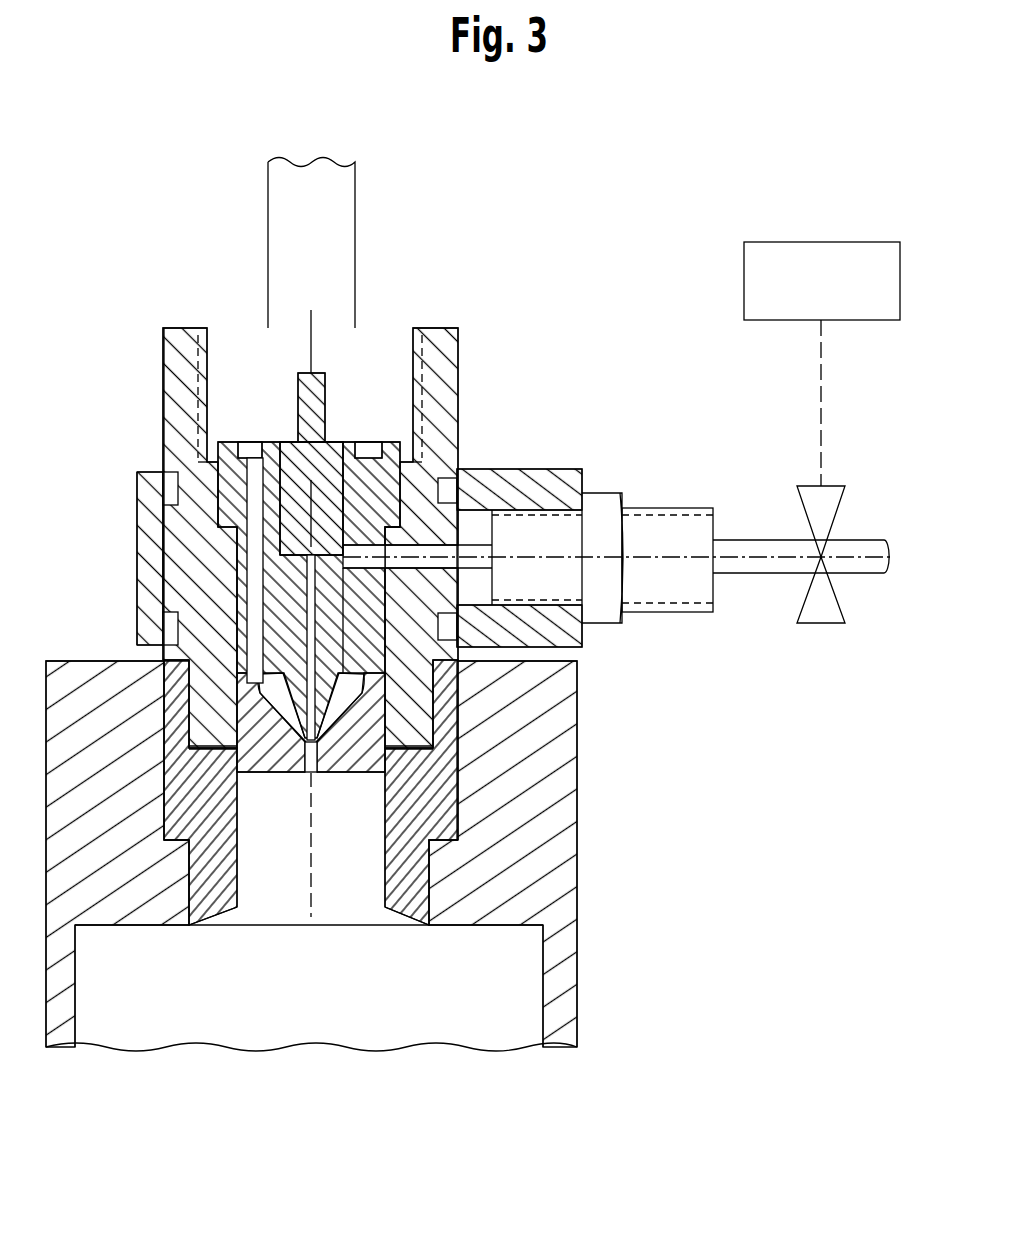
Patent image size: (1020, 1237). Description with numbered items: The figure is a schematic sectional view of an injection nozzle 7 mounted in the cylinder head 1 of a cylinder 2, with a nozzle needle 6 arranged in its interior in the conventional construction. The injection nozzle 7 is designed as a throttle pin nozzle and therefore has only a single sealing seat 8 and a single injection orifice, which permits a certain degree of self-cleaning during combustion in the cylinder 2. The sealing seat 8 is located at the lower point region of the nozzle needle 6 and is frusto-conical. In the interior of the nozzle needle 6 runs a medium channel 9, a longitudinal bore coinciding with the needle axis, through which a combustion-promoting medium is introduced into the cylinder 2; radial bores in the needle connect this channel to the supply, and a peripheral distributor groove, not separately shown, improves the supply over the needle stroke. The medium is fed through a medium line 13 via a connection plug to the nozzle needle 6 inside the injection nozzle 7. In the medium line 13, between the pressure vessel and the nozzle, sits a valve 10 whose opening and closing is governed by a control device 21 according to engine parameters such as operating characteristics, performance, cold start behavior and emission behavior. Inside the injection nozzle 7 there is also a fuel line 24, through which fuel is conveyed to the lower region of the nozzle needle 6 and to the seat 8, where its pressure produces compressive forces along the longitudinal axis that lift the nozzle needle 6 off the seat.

The cylinder head 1 is at (560, 818).
The cylinder 2 is at (466, 985).
The nozzle needle 6 is at (320, 403).
The injection nozzle 7 is at (440, 395).
The sealing seat 8 is at (318, 742).
The medium channel 9 is at (308, 605).
The valve 10 is at (830, 617).
The medium line 13 is at (525, 528).
The control device 21 is at (807, 250).
The fuel line 24 is at (256, 561).